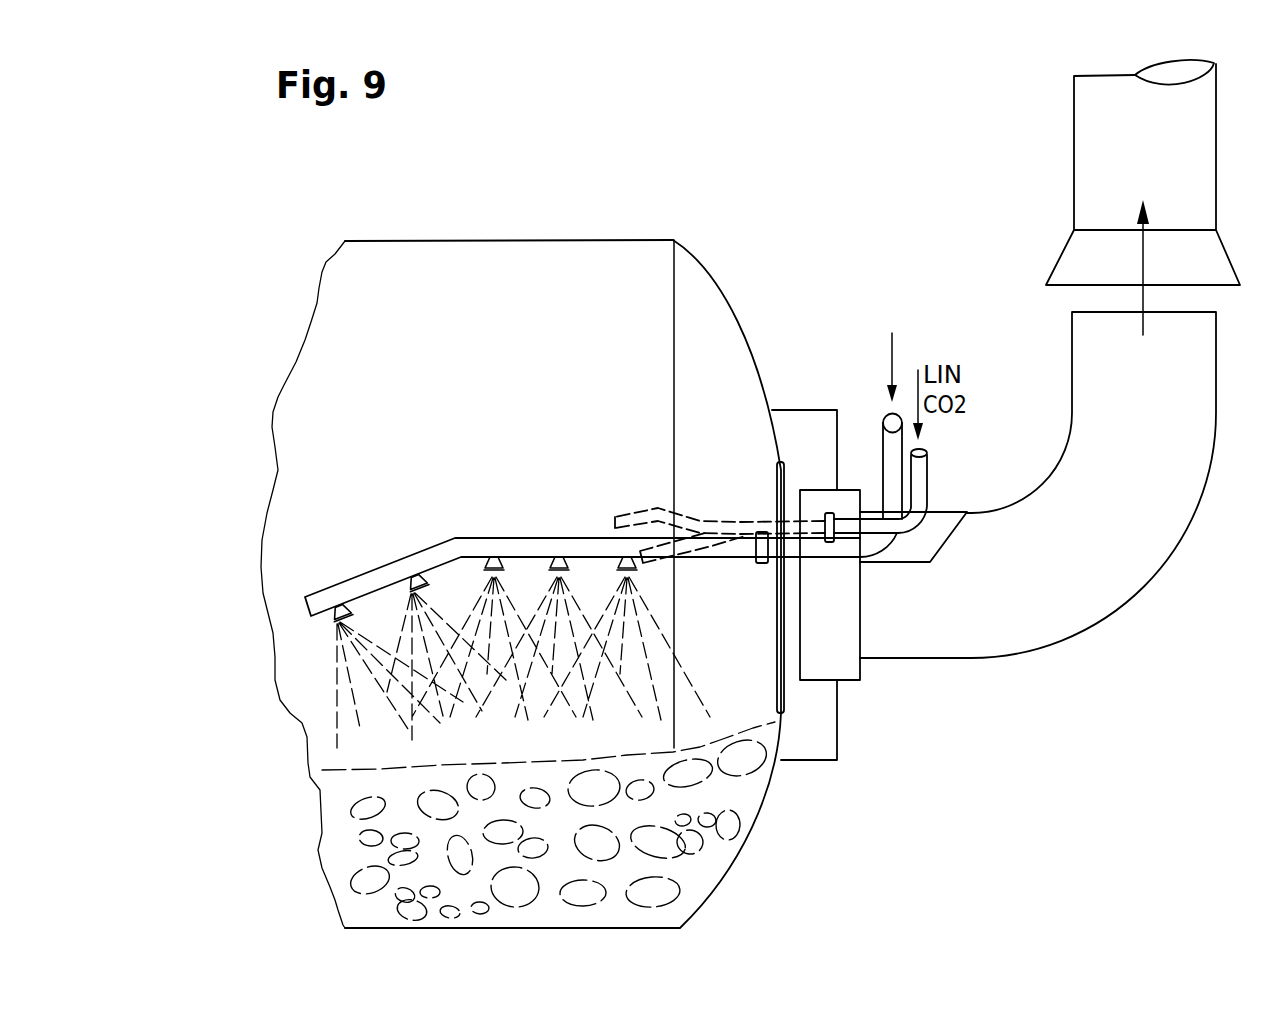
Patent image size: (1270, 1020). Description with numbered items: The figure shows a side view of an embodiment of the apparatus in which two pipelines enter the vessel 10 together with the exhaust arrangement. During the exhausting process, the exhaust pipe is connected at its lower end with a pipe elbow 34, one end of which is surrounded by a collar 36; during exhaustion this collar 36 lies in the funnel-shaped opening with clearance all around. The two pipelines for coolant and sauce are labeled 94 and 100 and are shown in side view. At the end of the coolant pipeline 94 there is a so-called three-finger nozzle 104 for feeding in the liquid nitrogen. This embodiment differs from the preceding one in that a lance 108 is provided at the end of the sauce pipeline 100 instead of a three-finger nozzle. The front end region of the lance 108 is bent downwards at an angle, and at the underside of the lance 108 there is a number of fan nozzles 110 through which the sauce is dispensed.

The tank 10 is at (732, 862).
The pipe elbow 34 is at (1147, 563).
The collar 36 is at (847, 663).
The pipeline for coolant 94 is at (921, 467).
The pipeline for sauce 100 is at (888, 440).
The three-finger nozzle 104 is at (652, 492).
The lance 108 is at (480, 538).
The fan nozzles 110 is at (413, 580).